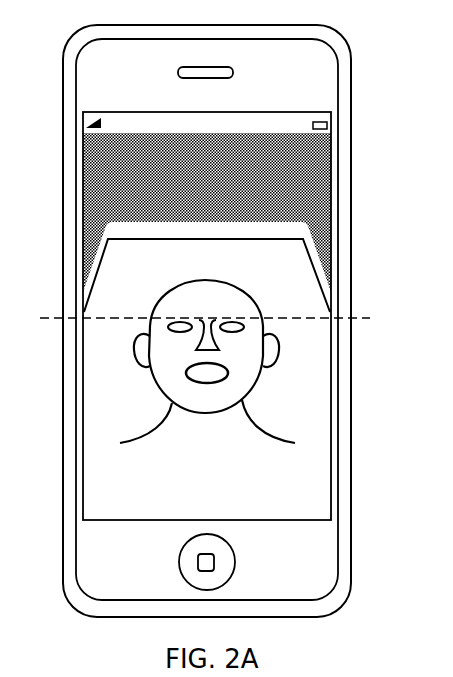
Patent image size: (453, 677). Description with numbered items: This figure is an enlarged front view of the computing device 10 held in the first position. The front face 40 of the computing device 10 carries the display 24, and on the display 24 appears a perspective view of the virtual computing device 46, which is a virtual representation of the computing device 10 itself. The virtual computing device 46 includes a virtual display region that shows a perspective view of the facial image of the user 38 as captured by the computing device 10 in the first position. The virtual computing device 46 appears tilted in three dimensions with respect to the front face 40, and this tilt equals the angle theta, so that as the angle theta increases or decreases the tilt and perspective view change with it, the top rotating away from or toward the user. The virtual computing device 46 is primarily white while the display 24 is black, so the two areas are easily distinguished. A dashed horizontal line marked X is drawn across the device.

The computing device 10 is at (63, 96).
The display 24 is at (115, 166).
The facial image of the user 38 is at (265, 375).
The front face 40 is at (95, 575).
The virtual computing device 46 is at (96, 405).
The angle theta is at (125, 272).
The axis X is at (206, 318).